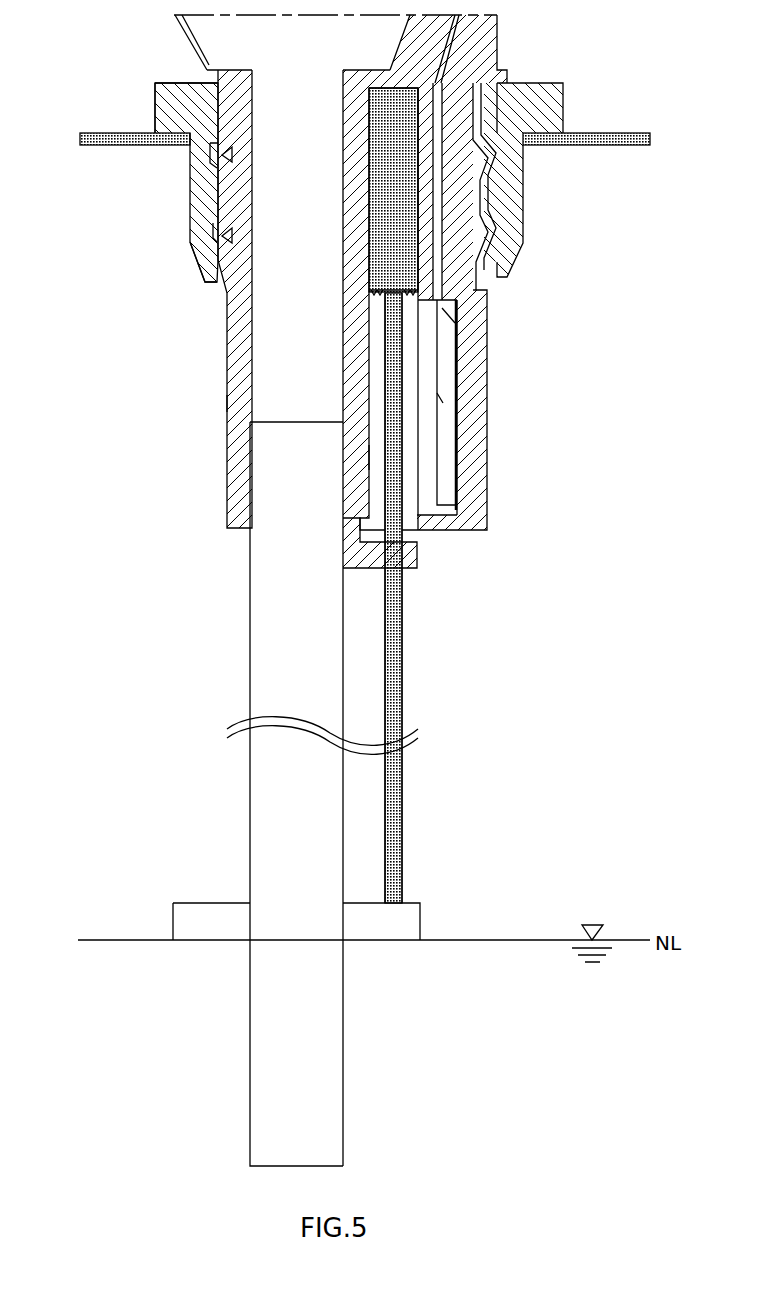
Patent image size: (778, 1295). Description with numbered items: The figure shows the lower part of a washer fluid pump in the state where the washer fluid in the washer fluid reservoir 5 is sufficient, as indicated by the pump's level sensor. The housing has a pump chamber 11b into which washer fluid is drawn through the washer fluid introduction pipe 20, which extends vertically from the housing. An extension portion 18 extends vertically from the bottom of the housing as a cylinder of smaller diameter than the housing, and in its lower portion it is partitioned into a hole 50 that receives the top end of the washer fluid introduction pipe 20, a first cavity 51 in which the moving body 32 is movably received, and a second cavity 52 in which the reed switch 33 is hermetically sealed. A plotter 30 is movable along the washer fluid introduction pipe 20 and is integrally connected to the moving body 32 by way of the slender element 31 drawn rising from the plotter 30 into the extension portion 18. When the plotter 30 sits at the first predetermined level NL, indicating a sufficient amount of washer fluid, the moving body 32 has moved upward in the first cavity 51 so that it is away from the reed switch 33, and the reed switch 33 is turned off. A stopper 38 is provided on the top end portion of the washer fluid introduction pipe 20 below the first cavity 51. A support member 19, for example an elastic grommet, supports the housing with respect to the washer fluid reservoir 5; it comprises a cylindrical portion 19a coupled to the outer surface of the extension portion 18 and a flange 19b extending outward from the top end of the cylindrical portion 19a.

The washer fluid reservoir 5 is at (638, 132).
The pump chamber 11b is at (323, 54).
The extension portion 18 is at (240, 348).
The support member 19 is at (160, 163).
The cylindrical portion 19a is at (200, 210).
The flange 19b is at (167, 111).
The washer fluid introduction pipe 20 is at (240, 636).
The plotter 30 is at (422, 918).
The rod 31 is at (403, 806).
The moving body 32 is at (398, 212).
The reed switch 33 is at (447, 430).
The stopper 38 is at (420, 552).
The hole 50 is at (245, 405).
The first cavity 51 is at (368, 473).
The second cavity 52 is at (455, 366).